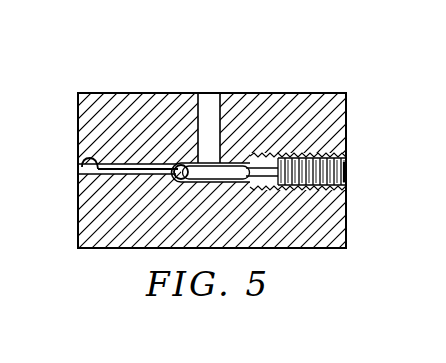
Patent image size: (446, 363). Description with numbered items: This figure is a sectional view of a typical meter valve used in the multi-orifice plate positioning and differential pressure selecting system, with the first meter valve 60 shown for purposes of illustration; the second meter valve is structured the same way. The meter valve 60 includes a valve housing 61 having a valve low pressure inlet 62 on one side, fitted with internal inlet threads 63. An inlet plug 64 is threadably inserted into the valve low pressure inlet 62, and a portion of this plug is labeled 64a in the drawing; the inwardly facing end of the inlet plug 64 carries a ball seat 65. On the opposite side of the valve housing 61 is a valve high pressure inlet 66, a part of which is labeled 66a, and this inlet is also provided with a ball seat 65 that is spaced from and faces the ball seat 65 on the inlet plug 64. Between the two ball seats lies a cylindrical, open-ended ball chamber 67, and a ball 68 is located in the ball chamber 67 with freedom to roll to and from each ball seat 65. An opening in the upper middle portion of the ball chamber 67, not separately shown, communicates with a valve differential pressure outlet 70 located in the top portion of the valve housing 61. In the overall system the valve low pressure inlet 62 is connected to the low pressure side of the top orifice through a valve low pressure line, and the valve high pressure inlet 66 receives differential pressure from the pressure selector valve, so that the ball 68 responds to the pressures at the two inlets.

The first meter valve 60 is at (300, 84).
The valve housing 61 is at (272, 93).
The valve low pressure inlet 62 is at (346, 171).
The internal inlet threads 63 is at (292, 188).
The inlet plug 64 is at (280, 154).
The screw shank 64a is at (249, 183).
The ball seat 65 is at (234, 160).
The valve high pressure inlet 66 is at (79, 170).
The wire end hook 66a is at (84, 162).
The ball chamber 67 is at (186, 165).
The ball 68 is at (160, 163).
The valve differential pressure outlet 70 is at (211, 108).